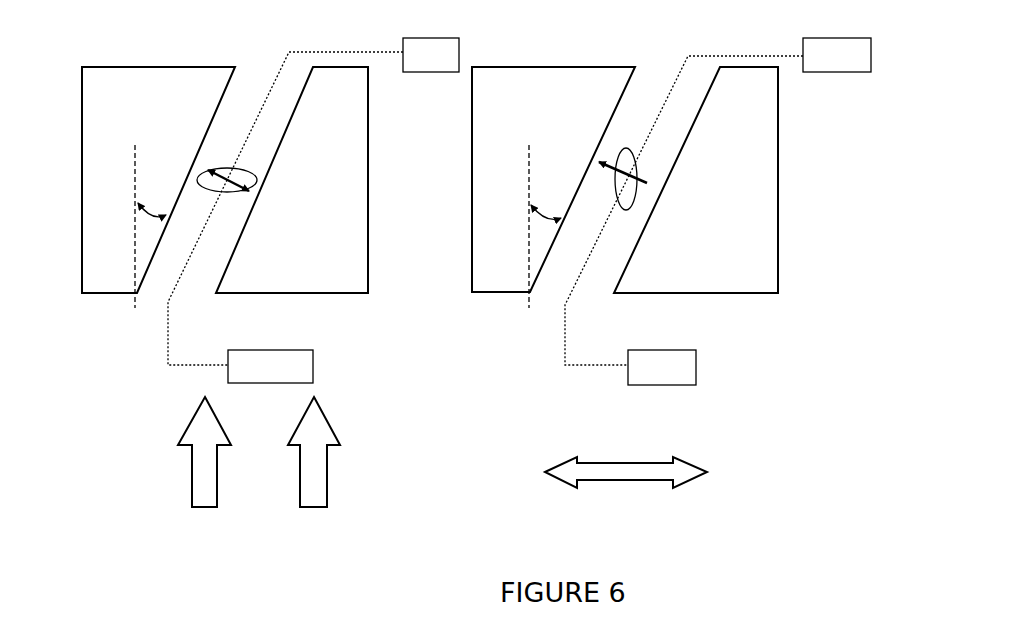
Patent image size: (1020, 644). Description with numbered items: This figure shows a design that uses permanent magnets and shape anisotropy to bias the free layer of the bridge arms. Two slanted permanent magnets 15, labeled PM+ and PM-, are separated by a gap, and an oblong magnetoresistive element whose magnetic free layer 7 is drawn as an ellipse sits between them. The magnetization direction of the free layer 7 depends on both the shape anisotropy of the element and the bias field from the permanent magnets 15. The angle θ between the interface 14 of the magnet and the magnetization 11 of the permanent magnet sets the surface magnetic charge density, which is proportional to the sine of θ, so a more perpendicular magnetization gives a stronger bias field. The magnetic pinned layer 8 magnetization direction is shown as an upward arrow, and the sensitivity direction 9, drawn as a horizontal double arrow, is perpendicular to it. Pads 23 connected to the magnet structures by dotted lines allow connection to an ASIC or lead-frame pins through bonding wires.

The interface 14 is at (218, 102).
The magnetic free layer 7 is at (240, 192).
The permanent magnet 15 is at (333, 243).
The pads 23 is at (307, 362).
The magnetic pinned layer magnetization direction 8 is at (205, 468).
The magnetization direction of the permanent magnet 11 is at (314, 468).
The sensitivity direction 9 is at (626, 472).